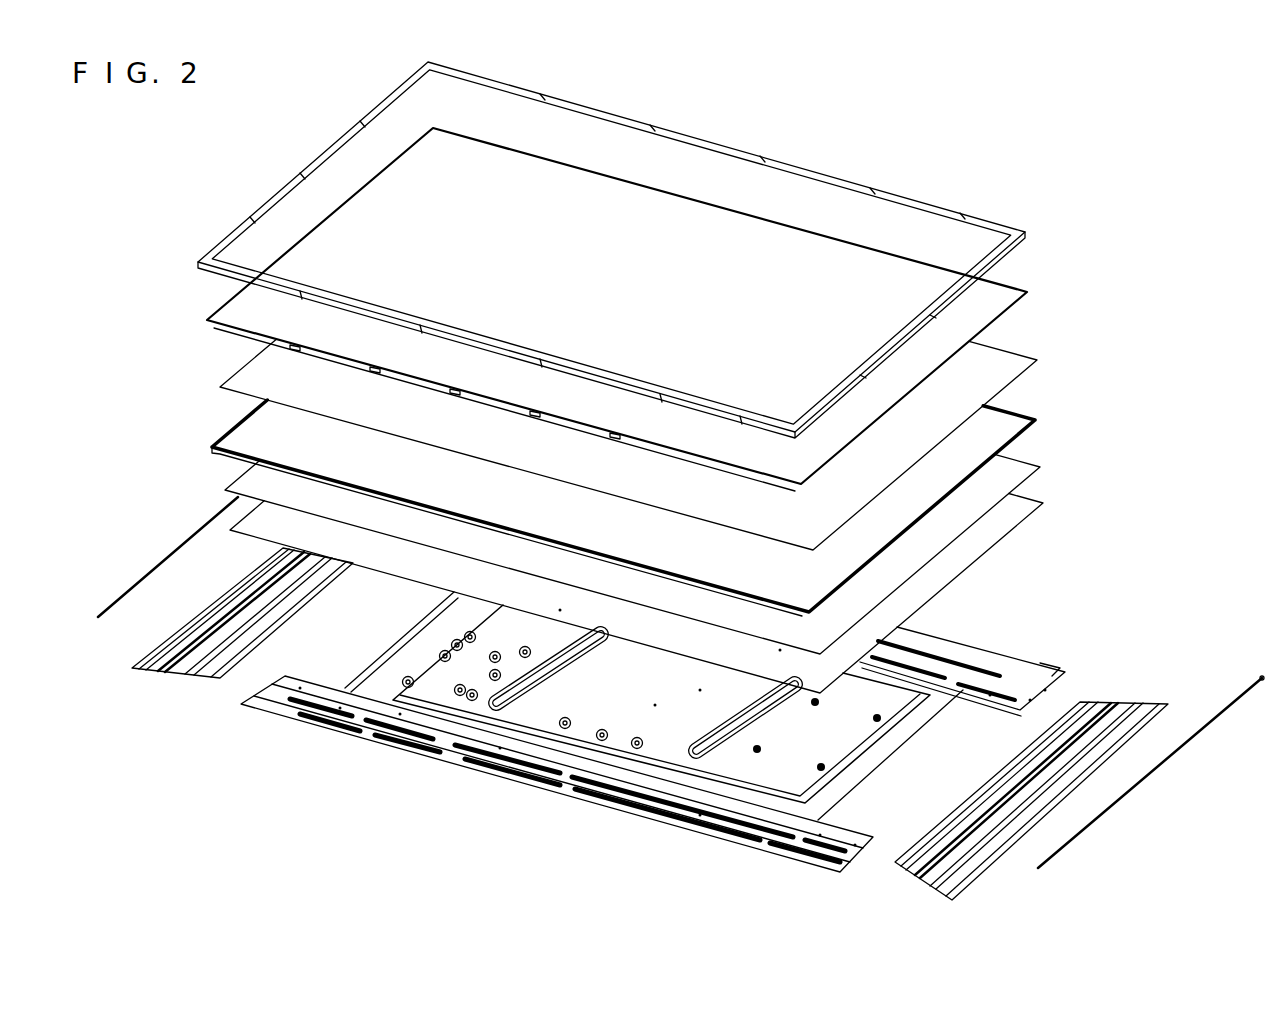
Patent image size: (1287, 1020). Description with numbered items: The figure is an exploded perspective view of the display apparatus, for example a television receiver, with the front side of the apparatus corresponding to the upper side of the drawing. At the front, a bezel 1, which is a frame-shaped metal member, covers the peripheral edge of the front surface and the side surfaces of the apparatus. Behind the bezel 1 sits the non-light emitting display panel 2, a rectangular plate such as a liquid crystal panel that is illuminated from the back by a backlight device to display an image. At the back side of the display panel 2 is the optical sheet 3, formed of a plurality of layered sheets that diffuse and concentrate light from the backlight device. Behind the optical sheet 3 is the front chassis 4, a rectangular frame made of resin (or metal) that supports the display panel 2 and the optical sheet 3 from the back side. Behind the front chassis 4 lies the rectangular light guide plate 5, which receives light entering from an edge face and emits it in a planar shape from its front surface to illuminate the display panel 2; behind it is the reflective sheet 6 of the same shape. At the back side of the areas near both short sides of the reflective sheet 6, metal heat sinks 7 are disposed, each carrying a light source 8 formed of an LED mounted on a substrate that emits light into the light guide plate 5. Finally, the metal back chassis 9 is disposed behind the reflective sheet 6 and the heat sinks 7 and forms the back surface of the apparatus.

The bezel 1 is at (1013, 253).
The display panel 2 is at (1000, 303).
The optical sheet 3 is at (1017, 362).
The front chassis 4 is at (1033, 407).
The light guide plate 5 is at (1023, 472).
The reflective sheet 6 is at (1003, 525).
The heat sink 7 is at (178, 670).
The light source 8 is at (113, 600).
The back chassis 9 is at (983, 652).